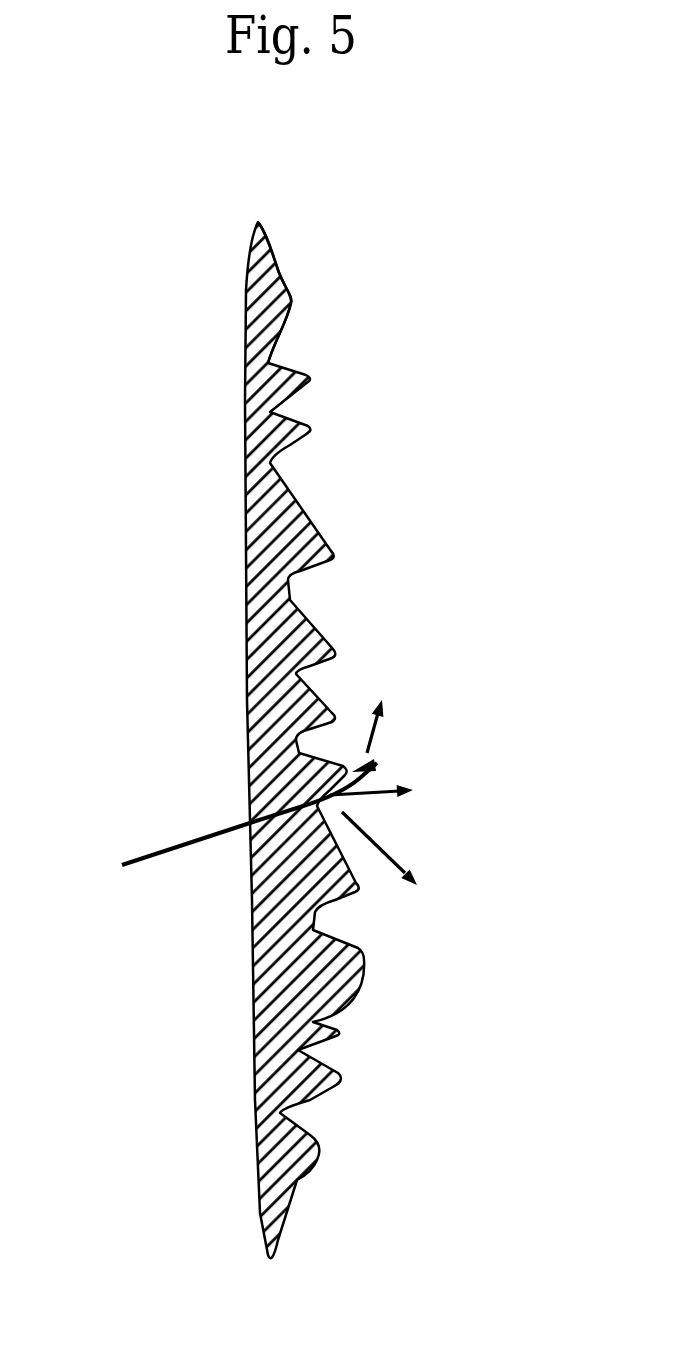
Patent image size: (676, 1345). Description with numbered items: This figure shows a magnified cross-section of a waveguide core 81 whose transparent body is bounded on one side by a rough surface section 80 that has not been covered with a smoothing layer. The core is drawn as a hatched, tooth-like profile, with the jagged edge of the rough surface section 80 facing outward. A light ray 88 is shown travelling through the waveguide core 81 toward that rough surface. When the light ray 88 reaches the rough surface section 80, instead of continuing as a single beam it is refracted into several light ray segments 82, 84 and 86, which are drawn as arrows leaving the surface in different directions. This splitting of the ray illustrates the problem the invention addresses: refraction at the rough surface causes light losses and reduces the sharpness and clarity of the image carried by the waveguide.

The rough surface section 80 is at (272, 282).
The waveguide core 81 is at (200, 392).
The light ray segment 82 is at (384, 714).
The light ray segment 84 is at (415, 792).
The light ray segment 86 is at (413, 888).
The light ray 88 is at (163, 847).